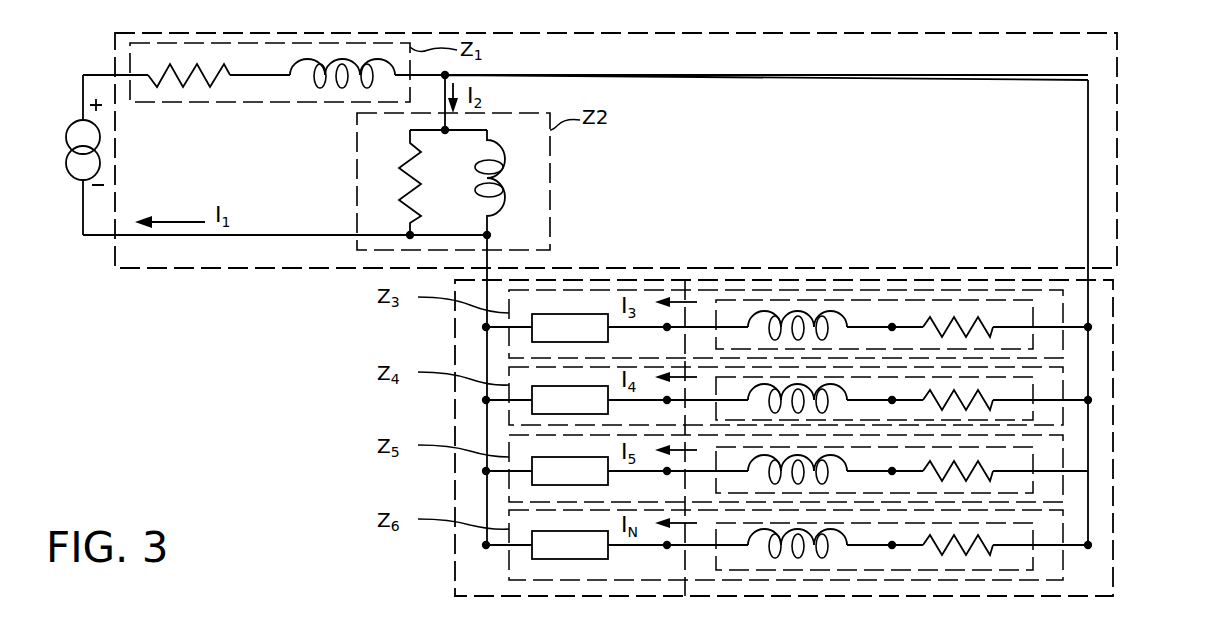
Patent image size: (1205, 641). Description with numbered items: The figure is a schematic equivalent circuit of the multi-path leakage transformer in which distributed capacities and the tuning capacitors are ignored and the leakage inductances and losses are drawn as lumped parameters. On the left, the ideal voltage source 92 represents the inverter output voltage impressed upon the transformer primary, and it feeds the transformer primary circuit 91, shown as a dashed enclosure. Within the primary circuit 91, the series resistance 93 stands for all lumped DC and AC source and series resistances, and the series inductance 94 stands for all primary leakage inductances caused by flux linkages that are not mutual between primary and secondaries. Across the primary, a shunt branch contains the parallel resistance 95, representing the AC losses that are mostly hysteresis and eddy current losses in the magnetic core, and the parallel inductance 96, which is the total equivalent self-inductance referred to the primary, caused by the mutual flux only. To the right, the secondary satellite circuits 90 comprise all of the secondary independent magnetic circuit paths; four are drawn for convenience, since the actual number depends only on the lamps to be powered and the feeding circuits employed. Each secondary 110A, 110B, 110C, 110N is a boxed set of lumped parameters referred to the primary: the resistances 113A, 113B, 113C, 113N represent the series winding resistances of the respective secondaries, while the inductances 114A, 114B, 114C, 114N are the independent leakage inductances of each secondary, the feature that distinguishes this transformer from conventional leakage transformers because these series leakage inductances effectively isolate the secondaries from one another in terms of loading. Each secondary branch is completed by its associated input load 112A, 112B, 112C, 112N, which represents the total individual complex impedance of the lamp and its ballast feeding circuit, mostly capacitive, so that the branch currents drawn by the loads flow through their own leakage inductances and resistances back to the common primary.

The secondary satellite circuits 90 is at (1113, 328).
The transformer primary circuit 91 is at (1117, 100).
The ideal voltage source 92 is at (77, 180).
The resistance 93 is at (213, 88).
The series inductance 94 is at (343, 87).
The resistance 95 is at (400, 170).
The parallel inductance 96 is at (506, 197).
The secondary 110A is at (1033, 300).
The secondary 110B is at (1033, 420).
The secondary 110C is at (1033, 460).
The secondary 110N is at (1033, 535).
The input load 112A is at (532, 337).
The input load 112B is at (532, 409).
The input load 112C is at (532, 481).
The input load 112N is at (532, 555).
The resistance 113A is at (945, 321).
The resistance 113B is at (945, 394).
The resistance 113C is at (945, 465).
The resistance 113N is at (945, 539).
The inductance 114A is at (832, 335).
The inductance 114B is at (832, 408).
The inductance 114C is at (832, 479).
The inductance 114N is at (832, 556).